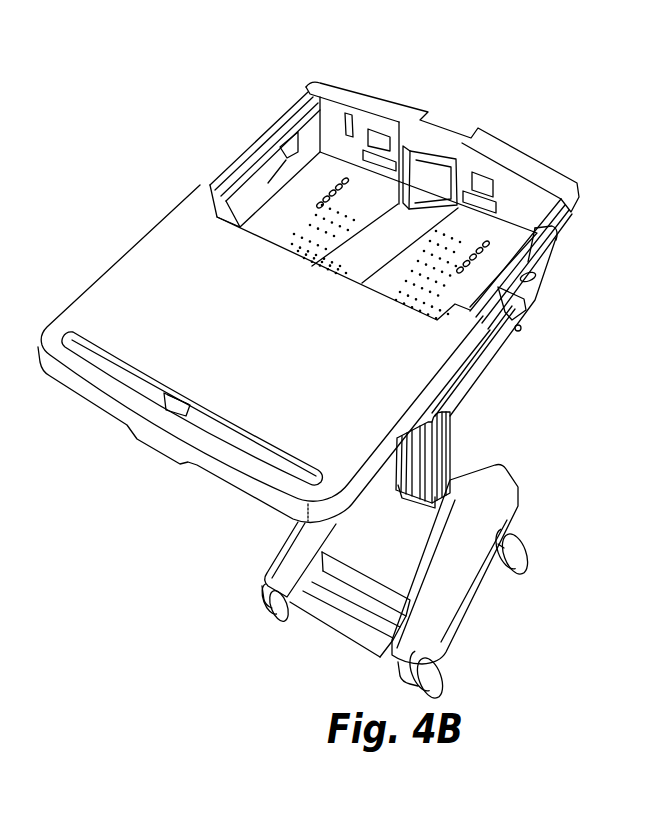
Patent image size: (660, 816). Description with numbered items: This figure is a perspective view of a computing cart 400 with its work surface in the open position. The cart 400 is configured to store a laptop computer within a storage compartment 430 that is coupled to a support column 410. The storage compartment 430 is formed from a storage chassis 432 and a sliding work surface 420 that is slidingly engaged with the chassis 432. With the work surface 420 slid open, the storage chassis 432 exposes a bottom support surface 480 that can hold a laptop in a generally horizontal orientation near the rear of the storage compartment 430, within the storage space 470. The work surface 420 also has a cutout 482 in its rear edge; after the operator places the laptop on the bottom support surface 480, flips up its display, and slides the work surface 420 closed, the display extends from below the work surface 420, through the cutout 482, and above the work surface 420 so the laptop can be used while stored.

The computing cart 400 is at (470, 110).
The support column 410 is at (447, 467).
The sliding work surface 420 is at (172, 275).
The storage compartment 430 is at (208, 168).
The storage chassis 432 is at (273, 130).
The storage space 470 is at (494, 197).
The bottom support surface 480 is at (390, 207).
The cutout 482 is at (412, 301).